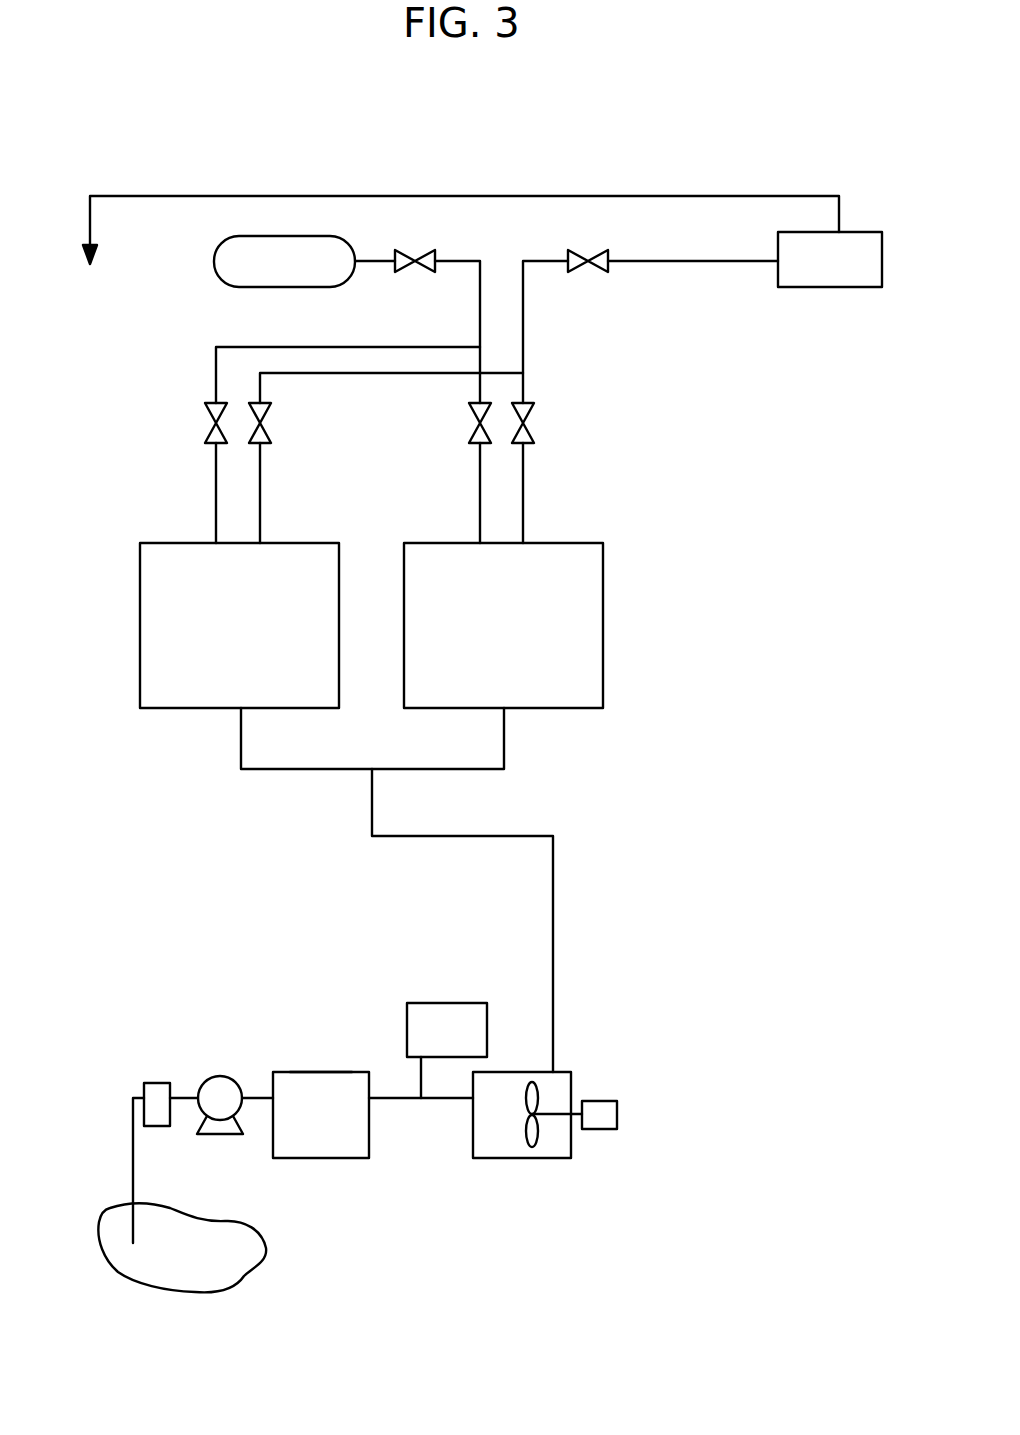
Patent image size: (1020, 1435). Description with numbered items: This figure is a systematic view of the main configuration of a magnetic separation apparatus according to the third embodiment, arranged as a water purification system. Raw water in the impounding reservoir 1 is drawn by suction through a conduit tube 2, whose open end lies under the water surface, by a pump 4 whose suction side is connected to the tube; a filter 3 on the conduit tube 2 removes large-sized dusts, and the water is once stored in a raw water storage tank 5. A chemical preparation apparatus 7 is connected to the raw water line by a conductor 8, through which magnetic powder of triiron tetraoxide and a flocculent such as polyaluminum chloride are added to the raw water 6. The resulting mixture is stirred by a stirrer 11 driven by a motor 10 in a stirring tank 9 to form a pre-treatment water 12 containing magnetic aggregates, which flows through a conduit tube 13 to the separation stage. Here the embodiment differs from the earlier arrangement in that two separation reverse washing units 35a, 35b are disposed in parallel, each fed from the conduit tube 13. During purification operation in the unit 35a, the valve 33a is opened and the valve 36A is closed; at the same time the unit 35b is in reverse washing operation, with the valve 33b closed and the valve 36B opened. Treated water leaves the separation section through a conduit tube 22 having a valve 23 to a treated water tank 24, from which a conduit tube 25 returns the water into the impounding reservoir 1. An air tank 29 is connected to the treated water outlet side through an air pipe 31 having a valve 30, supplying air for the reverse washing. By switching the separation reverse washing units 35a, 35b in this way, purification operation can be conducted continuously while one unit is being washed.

The impounding reservoir 1 is at (268, 1246).
The conduit tube 2 is at (134, 1172).
The filter 3 is at (156, 1082).
The pump 4 is at (212, 1078).
The raw water storage tank 5 is at (334, 1159).
The raw water 6 is at (310, 1078).
The chemical preparation apparatus 7 is at (438, 1003).
The conductor 8 is at (424, 1074).
The stirring tank 9 is at (520, 1159).
The motor 10 is at (617, 1112).
The stirrer 11 is at (538, 1088).
The pre-treatment water 12 is at (552, 1150).
The conduit tube 13 is at (554, 934).
The conduit tube 22 is at (523, 315).
The valve 23 is at (596, 262).
The treated water tank 24 is at (842, 288).
The conduit tube 25 is at (338, 196).
The air tank 29 is at (214, 258).
The valve 30 is at (424, 262).
The air pipe 31 is at (480, 326).
The valve 33a is at (532, 432).
The valve 33b is at (268, 432).
The separation reverse washing unit 35a is at (603, 633).
The separation reverse washing unit 35b is at (140, 633).
The valve 36A is at (474, 430).
The valve 36B is at (210, 430).